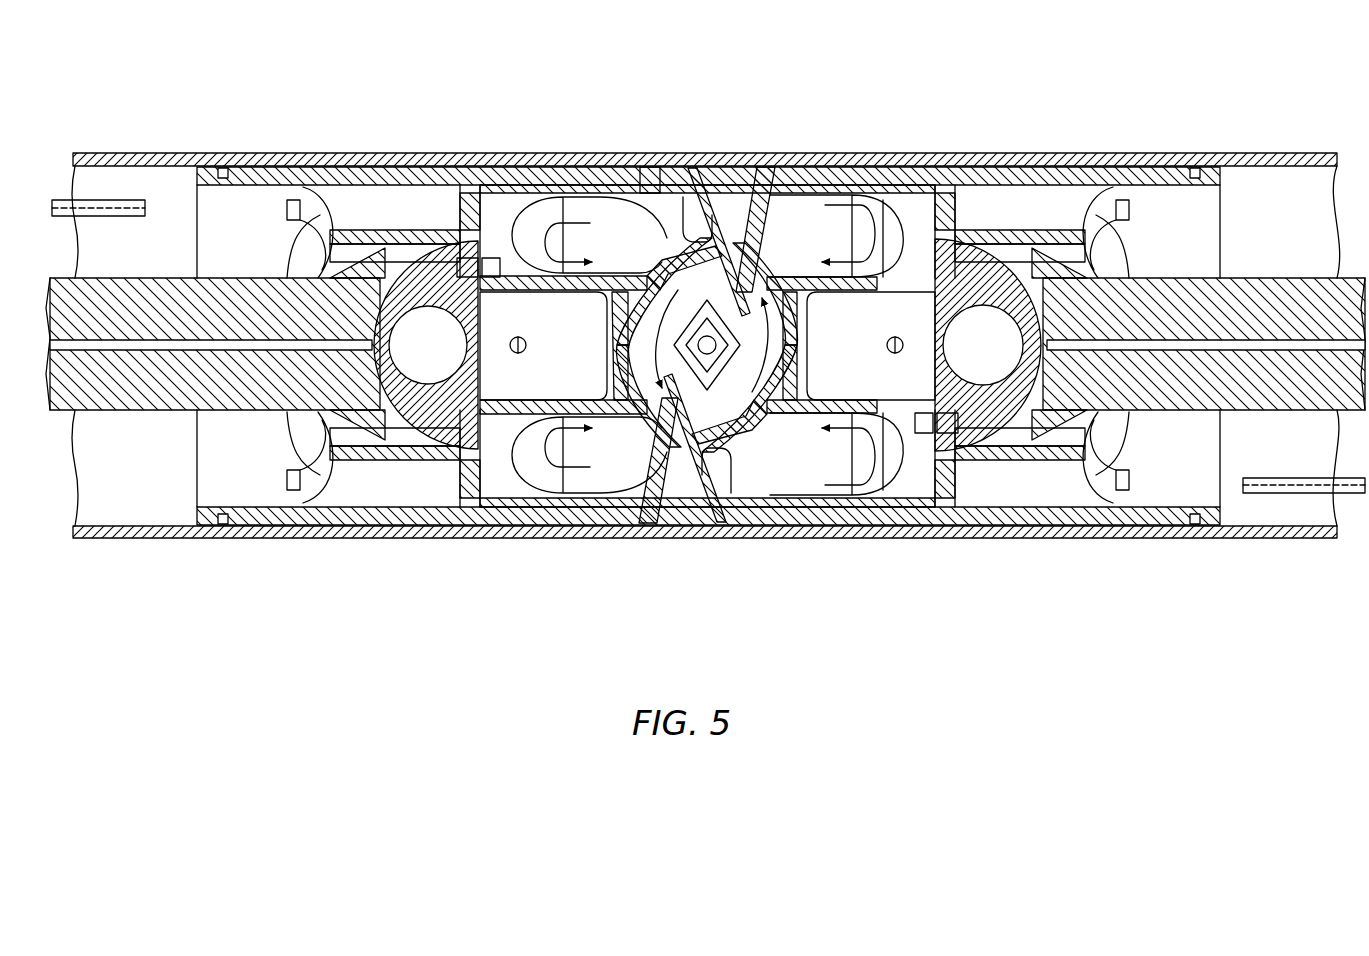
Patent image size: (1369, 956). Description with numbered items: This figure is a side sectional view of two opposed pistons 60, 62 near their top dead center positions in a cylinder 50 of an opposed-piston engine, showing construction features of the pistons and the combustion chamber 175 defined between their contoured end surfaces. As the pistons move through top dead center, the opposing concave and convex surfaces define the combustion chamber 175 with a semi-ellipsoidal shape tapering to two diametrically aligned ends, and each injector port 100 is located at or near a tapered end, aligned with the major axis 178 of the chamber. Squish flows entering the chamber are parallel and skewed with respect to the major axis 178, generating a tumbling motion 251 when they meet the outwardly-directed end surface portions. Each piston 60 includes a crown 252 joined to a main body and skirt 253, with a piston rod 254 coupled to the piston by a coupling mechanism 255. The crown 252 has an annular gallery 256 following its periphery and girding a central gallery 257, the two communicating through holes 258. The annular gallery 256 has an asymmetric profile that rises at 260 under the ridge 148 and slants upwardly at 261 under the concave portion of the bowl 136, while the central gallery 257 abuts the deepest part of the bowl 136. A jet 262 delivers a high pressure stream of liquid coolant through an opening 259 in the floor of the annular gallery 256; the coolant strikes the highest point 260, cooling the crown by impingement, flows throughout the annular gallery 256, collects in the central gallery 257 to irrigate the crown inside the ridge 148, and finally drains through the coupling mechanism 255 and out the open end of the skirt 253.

The cylinder 50 is at (1040, 538).
The piston 60 is at (415, 153).
The piston 62 is at (1068, 153).
The injector port 100 is at (717, 353).
The bowl 136 is at (768, 270).
The ridge 148 is at (748, 290).
The combustion chamber 175 is at (667, 410).
The major axis 178 is at (707, 354).
The tumbling motion 251 is at (762, 362).
The crown 252 is at (648, 168).
The main body and skirt 253 is at (330, 167).
The piston rod 254 is at (112, 412).
The coupling mechanism 255 is at (374, 383).
The annular gallery 256 is at (607, 232).
The central gallery 257 is at (497, 380).
The holes 258 is at (525, 408).
The opening 259 is at (552, 208).
The highest point of annular gallery 260 is at (714, 236).
The upwardly slanting portion of annular gallery 261 is at (668, 226).
The jet 262 is at (98, 200).